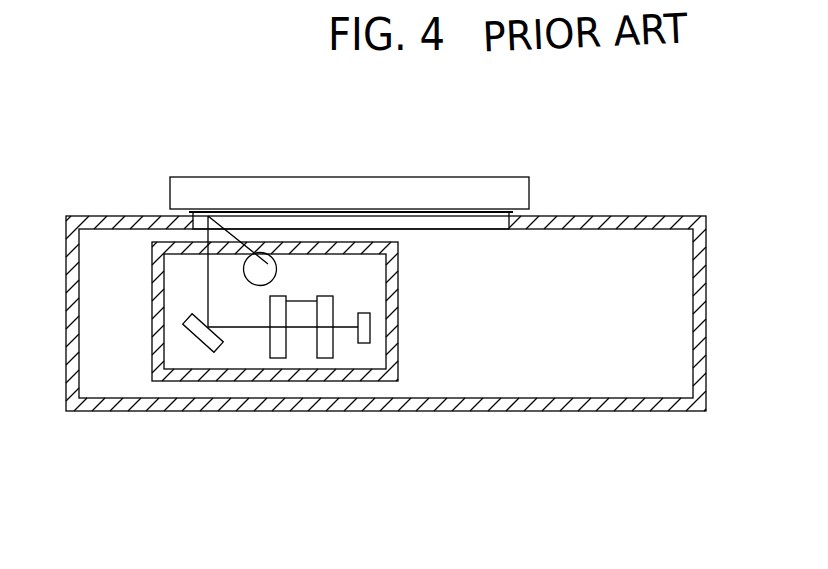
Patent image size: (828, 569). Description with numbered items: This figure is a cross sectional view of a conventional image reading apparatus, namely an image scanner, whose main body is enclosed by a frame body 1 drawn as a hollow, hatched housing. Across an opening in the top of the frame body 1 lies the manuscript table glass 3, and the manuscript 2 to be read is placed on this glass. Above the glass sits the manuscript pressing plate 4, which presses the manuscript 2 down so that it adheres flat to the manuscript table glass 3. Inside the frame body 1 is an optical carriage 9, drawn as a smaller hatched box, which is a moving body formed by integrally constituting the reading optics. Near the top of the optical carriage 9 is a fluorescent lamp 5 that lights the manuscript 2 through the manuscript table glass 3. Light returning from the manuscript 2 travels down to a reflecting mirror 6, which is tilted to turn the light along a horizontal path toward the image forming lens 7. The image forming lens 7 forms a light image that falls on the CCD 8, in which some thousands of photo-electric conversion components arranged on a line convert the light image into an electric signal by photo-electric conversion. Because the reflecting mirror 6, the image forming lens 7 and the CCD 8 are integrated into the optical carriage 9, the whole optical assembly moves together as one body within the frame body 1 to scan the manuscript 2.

The frame body 1 is at (615, 400).
The manuscript 2 is at (492, 212).
The manuscript table glass 3 is at (447, 225).
The manuscript pressing plate 4 is at (333, 184).
The fluorescent lamp 5 is at (275, 256).
The reflecting mirror 6 is at (212, 346).
The image forming lens 7 is at (303, 348).
The CCD 8 is at (362, 343).
The optical carriage 9 is at (395, 354).